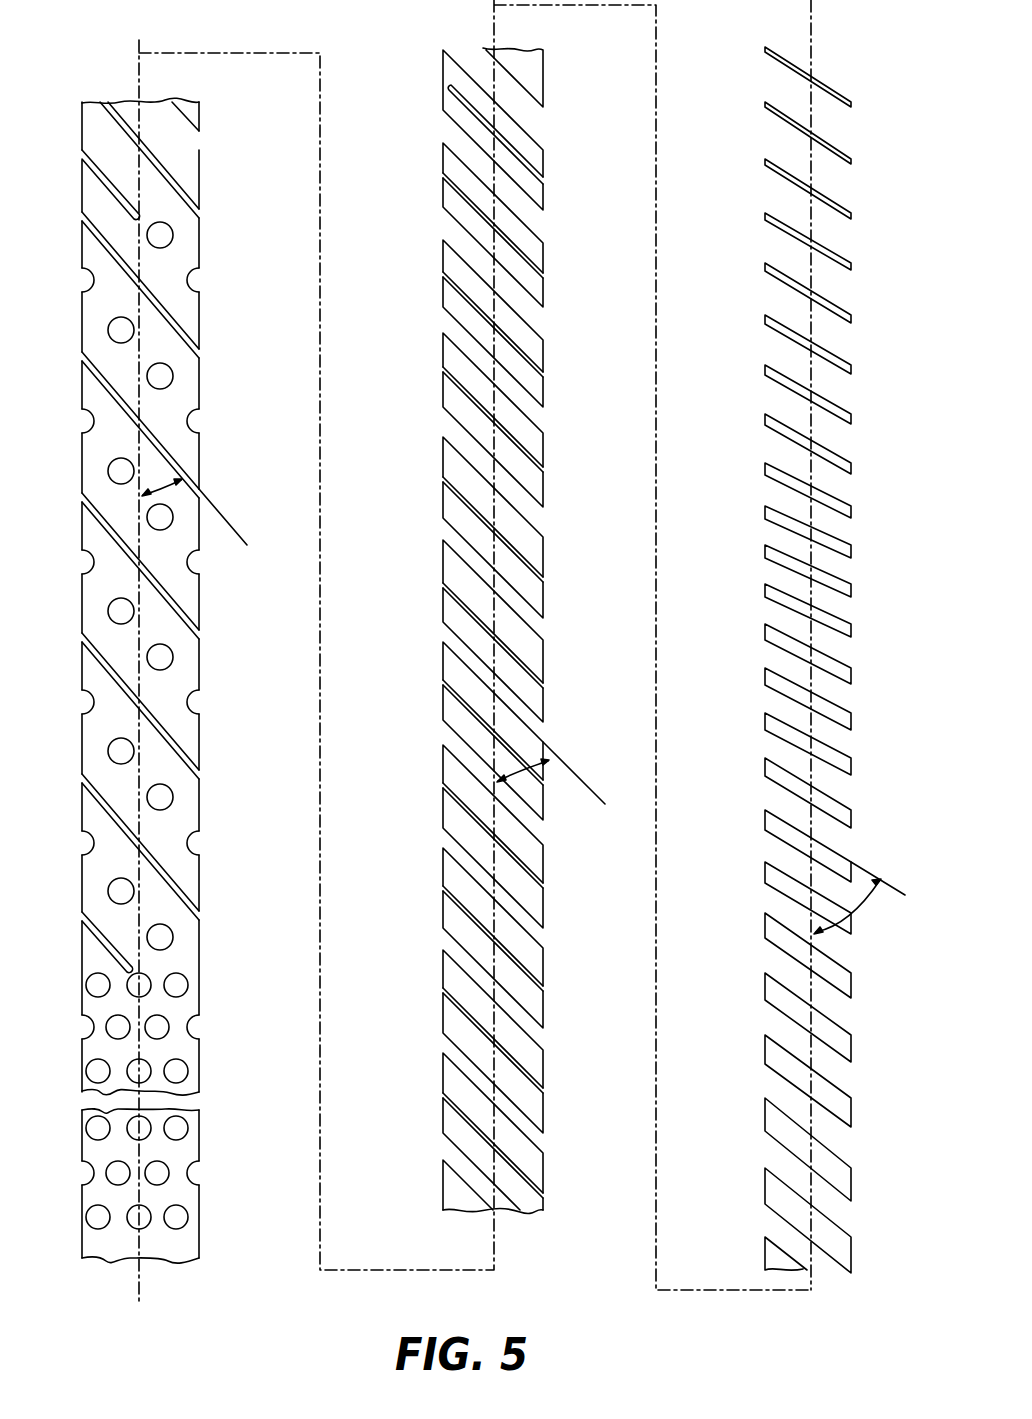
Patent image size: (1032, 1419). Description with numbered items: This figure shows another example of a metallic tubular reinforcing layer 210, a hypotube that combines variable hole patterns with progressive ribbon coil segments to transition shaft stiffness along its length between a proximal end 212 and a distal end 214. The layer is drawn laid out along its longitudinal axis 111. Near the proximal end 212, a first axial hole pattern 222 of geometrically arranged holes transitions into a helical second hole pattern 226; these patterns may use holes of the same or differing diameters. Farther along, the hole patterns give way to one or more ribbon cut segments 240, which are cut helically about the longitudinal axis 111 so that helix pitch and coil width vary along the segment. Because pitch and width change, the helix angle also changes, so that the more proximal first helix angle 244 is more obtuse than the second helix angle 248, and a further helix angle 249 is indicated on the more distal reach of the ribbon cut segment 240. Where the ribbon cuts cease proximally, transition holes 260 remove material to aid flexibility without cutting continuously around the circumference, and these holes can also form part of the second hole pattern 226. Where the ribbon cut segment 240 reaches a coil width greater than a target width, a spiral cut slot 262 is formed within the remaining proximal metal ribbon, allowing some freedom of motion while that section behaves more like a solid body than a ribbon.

The longitudinal axis 111 is at (139, 78).
The metallic tubular reinforcing layer 210 is at (202, 163).
The proximal end 212 is at (195, 1262).
The distal end 214 is at (843, 50).
The first axial hole pattern 222 is at (150, 1073).
The second hole pattern 226 is at (82, 708).
The ribbon cut segment 240 is at (605, 660).
The first helix angle 244 is at (172, 492).
The second helix angle 248 is at (523, 780).
The slot angle 249 is at (868, 905).
The transition holes 260 is at (170, 237).
The spiral cut slot 262 is at (474, 108).